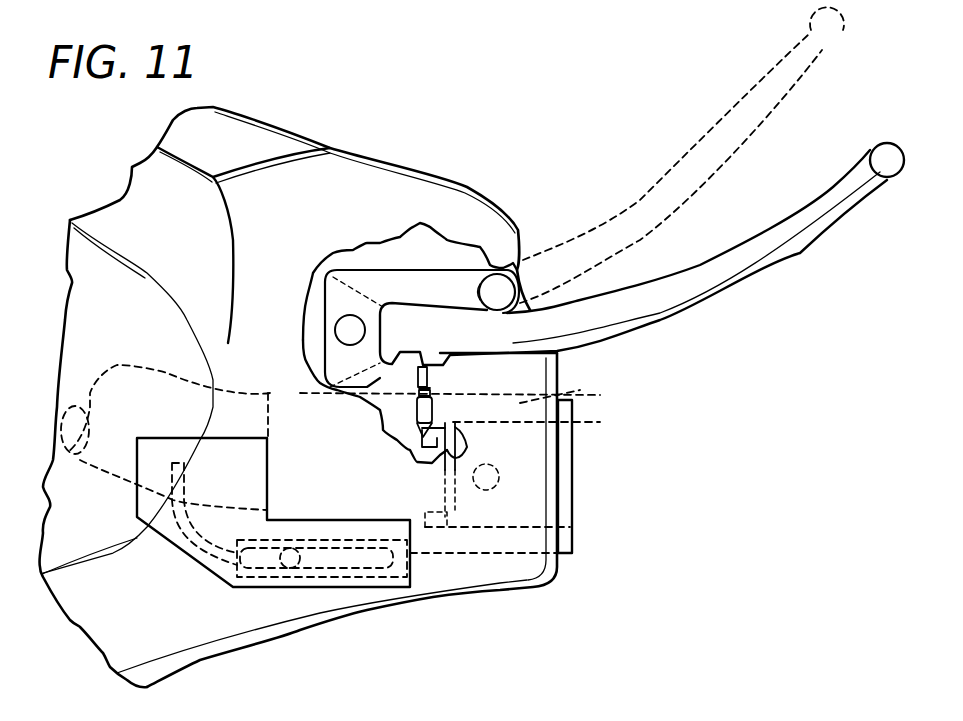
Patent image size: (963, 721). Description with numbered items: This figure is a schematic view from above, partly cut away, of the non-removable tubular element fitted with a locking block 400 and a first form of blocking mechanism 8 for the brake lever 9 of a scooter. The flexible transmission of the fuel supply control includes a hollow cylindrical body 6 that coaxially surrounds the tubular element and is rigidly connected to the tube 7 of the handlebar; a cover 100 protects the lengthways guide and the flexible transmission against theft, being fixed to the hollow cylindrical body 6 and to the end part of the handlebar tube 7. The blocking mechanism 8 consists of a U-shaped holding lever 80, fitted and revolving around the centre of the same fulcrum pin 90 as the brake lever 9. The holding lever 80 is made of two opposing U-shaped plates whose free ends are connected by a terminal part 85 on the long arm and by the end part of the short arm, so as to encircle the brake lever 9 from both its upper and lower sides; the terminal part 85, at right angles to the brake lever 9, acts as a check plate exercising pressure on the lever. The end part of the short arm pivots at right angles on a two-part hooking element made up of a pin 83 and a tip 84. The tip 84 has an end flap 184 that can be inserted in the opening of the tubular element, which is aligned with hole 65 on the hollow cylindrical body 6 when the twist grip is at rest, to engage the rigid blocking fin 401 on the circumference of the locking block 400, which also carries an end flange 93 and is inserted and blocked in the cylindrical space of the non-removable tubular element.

The hollow cylindrical body 6 is at (600, 395).
The tube 7 is at (137, 420).
The blocking mechanism 8 is at (428, 262).
The brake lever 9 is at (763, 253).
The hole 65 is at (493, 388).
The holding lever 80 is at (450, 282).
The pin 83 is at (437, 377).
The tip 84 is at (417, 440).
The terminal part 85 is at (497, 292).
The fulcrum pin 90 is at (348, 333).
The end flange 93 is at (572, 482).
The cover 100 is at (280, 585).
The end flap 184 is at (433, 432).
The locking block 400 is at (570, 528).
The blocking fin 401 is at (445, 428).